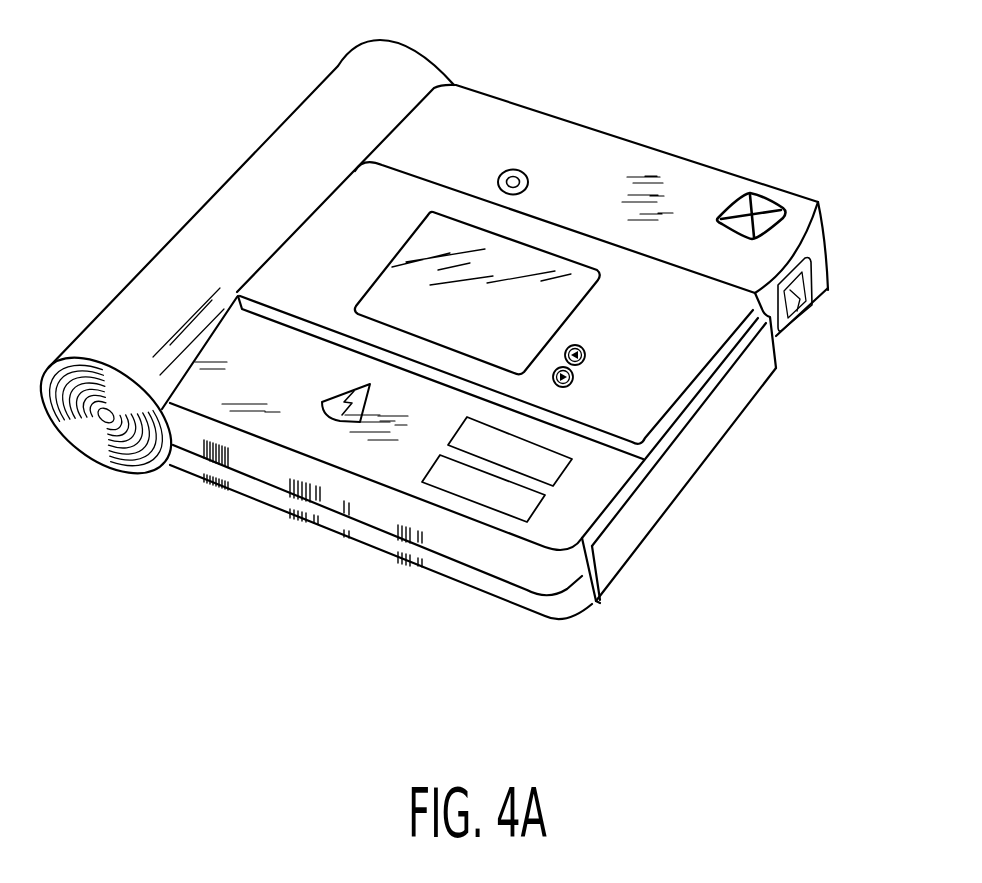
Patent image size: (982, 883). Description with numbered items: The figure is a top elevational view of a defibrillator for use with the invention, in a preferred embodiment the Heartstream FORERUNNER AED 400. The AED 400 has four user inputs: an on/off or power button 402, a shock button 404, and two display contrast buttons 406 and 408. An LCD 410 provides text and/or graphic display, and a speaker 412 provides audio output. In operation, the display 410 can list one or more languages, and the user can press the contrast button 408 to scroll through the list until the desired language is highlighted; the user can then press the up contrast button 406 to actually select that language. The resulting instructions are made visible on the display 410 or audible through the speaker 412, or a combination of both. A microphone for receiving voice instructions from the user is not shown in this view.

The FORERUNNER AED 400 is at (490, 352).
The power button 402 is at (528, 183).
The shock button 404 is at (322, 403).
The up contrast button 406 is at (590, 355).
The contrast button 408 is at (571, 384).
The LCD 410 is at (418, 251).
The speaker 412 is at (92, 458).